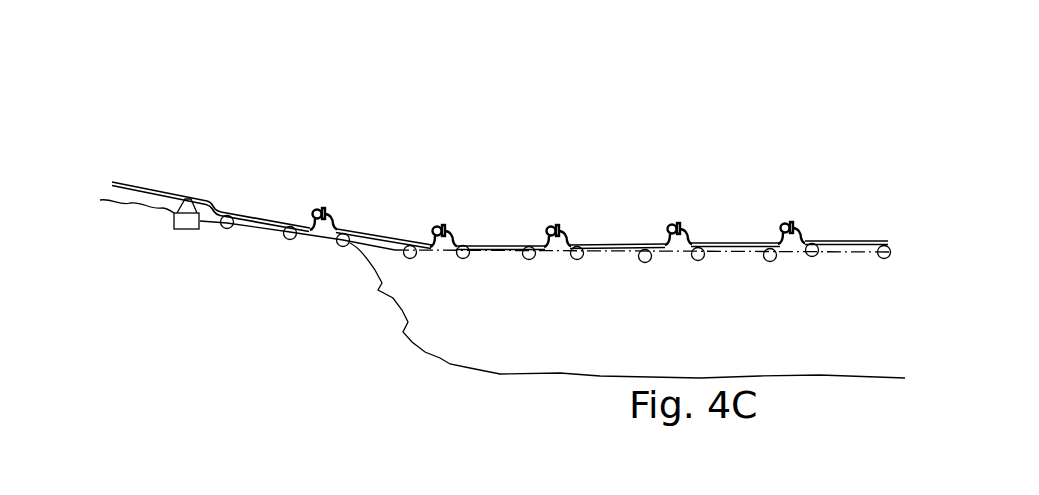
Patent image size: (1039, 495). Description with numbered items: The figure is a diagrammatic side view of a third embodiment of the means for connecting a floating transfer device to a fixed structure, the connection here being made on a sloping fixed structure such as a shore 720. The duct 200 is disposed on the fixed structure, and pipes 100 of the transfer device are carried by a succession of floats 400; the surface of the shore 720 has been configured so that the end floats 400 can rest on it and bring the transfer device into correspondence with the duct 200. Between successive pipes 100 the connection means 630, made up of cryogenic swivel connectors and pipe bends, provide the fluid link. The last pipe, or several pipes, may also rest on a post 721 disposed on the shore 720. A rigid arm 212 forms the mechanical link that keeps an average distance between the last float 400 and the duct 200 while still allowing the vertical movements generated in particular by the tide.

The duct 200 is at (149, 177).
The panel module 100 is at (268, 209).
The connection means 630 is at (326, 204).
The float 400 is at (291, 247).
The shore 720 is at (100, 223).
The post 721 is at (187, 223).
The rigid arm 212 is at (270, 332).